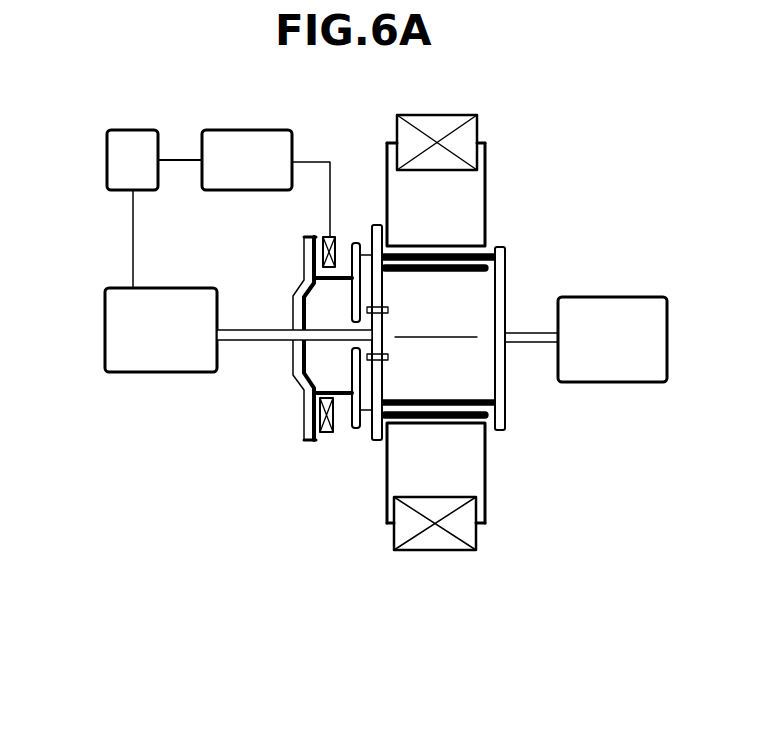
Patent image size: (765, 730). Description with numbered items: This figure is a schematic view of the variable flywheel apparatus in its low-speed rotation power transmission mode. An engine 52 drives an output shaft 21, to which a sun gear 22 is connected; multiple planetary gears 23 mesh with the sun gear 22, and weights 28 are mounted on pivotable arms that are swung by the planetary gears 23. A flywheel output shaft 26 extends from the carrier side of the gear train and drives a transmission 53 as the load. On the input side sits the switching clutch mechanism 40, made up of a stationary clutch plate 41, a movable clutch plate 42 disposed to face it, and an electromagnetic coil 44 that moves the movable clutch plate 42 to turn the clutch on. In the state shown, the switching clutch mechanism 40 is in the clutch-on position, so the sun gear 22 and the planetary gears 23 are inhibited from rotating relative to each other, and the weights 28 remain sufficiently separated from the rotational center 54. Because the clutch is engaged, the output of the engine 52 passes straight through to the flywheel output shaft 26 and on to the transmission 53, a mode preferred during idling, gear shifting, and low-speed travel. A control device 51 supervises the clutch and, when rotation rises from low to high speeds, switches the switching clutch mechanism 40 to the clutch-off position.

The output shaft 21 is at (238, 343).
The sun gear 22 is at (388, 328).
The planetary gears 23 is at (387, 298).
The flywheel output shaft 26 is at (507, 345).
The weights 28 is at (482, 128).
The switching clutch mechanism 40 is at (279, 324).
The stationary clutch plate 41 is at (313, 437).
The movable clutch plate 42 is at (303, 437).
The electromagnetic coil 44 is at (333, 237).
The control device 51 is at (240, 130).
The engine 52 is at (108, 328).
The transmission 53 is at (610, 297).
The rotational center 54 is at (460, 337).